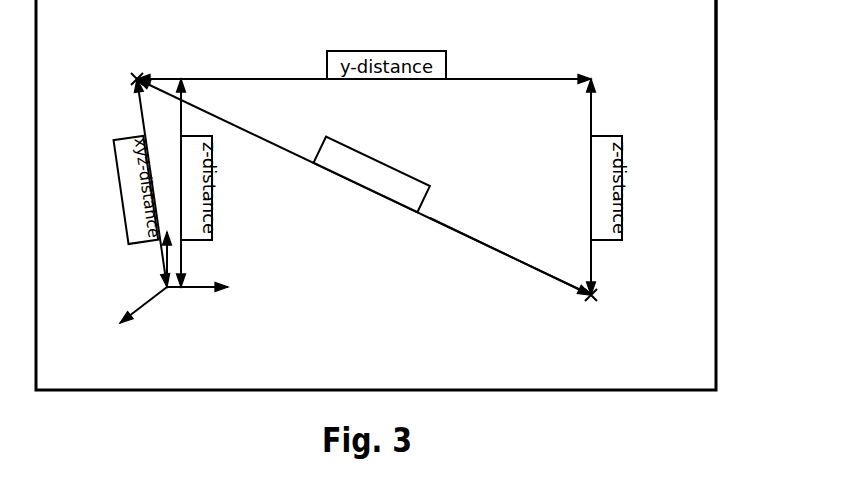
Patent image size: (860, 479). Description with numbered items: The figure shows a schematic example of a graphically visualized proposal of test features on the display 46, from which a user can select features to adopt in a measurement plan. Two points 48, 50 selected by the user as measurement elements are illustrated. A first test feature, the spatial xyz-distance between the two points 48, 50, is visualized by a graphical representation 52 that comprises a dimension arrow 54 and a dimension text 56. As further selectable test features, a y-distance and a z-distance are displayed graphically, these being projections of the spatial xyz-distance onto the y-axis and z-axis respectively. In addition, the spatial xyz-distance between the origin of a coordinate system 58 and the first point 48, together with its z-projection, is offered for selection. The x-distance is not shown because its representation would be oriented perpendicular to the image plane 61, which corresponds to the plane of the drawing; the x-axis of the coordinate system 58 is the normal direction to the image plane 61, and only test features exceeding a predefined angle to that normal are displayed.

The display 46 is at (698, 265).
The first point 48 is at (139, 74).
The second point 50 is at (591, 301).
The graphical representation 52 is at (366, 190).
The dimension arrow 54 is at (500, 253).
The dimension text 56 is at (406, 183).
The coordinate system 58 is at (170, 291).
The image plane 61 is at (700, 14).